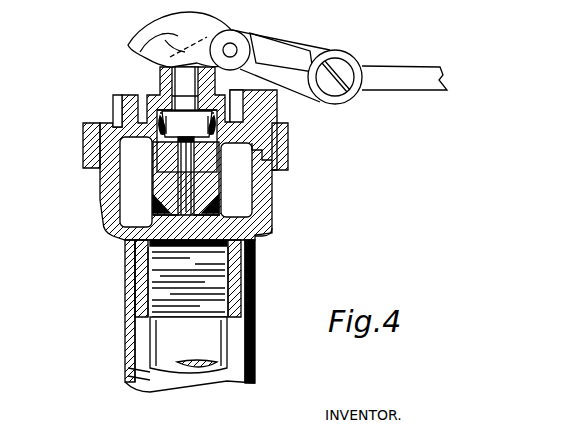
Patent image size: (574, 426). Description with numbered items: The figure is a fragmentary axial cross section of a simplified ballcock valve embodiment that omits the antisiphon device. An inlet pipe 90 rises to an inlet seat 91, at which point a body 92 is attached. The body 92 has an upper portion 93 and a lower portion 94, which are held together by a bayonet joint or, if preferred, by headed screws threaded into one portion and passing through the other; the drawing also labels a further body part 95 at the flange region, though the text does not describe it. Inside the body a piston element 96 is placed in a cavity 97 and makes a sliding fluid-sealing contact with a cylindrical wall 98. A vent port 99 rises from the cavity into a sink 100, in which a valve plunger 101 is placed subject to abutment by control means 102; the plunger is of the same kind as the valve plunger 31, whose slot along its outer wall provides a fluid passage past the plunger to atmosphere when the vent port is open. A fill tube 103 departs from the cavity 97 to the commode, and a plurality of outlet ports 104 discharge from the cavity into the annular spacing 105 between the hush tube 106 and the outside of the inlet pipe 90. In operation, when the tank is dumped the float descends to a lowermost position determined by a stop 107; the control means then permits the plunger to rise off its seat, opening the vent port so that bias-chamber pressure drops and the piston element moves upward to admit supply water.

The valve plunger 31 is at (172, 82).
The inlet pipe 90 is at (228, 346).
The inlet seat 91 is at (222, 199).
The body 92 is at (230, 170).
The upper portion 93 is at (278, 120).
The lower portion 94 is at (268, 232).
The flange 95 is at (97, 170).
The piston element 96 is at (160, 133).
The cavity 97 is at (148, 204).
The cylindrical wall 98 is at (290, 160).
The vent port 99 is at (160, 100).
The sink 100 is at (160, 57).
The valve plunger 101 is at (205, 58).
The control means 102 is at (318, 34).
The fill tube 103 is at (113, 96).
The outlet ports 104 is at (138, 284).
The annular spacing 105 is at (128, 353).
The hush tube 106 is at (123, 382).
The stop 107 is at (312, 103).